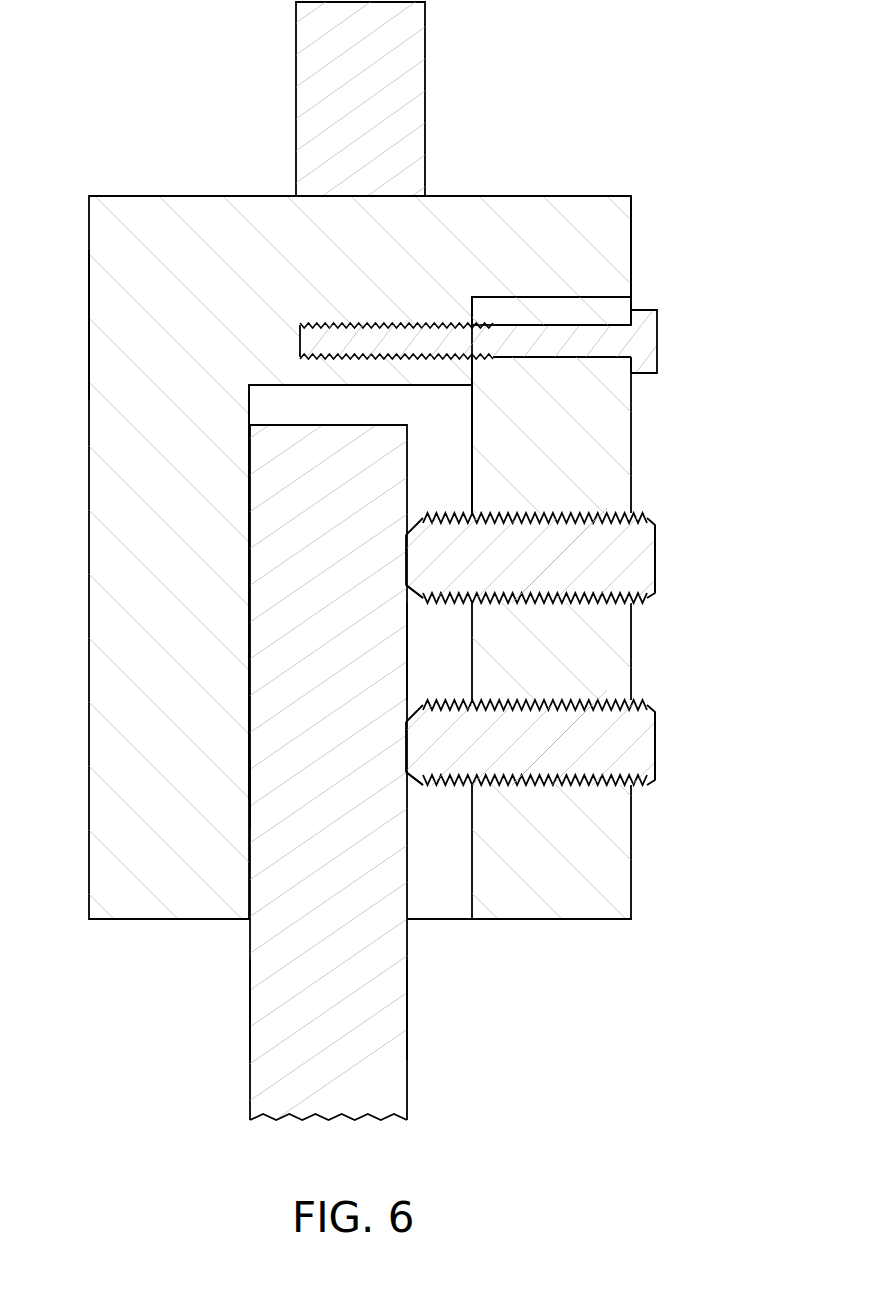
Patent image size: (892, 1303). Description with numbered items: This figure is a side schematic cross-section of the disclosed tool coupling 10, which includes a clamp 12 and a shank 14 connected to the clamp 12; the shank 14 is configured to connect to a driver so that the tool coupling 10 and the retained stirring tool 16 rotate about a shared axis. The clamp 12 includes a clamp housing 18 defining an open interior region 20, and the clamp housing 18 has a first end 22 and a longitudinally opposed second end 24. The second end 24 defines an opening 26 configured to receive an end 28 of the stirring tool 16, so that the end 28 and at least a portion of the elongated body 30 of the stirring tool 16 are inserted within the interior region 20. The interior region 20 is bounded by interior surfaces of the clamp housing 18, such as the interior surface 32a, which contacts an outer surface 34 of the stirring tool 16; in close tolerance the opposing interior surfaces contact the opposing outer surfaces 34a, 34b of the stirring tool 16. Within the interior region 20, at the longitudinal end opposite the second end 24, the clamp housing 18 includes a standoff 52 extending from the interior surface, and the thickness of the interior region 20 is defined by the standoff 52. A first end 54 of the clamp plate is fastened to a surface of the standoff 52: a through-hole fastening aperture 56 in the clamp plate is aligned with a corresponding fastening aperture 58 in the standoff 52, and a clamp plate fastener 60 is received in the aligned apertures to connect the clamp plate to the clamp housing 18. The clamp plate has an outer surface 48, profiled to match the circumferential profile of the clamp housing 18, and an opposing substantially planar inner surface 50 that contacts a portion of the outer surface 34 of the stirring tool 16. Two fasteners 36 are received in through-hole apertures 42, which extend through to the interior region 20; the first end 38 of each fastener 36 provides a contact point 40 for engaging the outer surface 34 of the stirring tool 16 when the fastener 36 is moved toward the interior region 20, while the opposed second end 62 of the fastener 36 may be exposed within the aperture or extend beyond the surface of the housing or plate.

The tool coupling 10 is at (411, 132).
The clamp 12 is at (89, 248).
The shank 14 is at (425, 110).
The stirring tool 16 is at (385, 1063).
The clamp housing 18 is at (112, 308).
The open interior region 20 is at (265, 402).
The first end 22 is at (463, 148).
The second end 24 is at (169, 984).
The opening 26 is at (407, 922).
The end 28 is at (347, 562).
The elongated body 30 is at (262, 746).
The interior surface 32a is at (249, 578).
The outer surface 34 is at (250, 1015).
The outer surface 34a is at (250, 787).
The outer surface 34b is at (406, 648).
The fastener 36 is at (600, 542).
The first end 38 is at (420, 603).
The contact point 40 is at (406, 548).
The through-hole aperture 42 is at (545, 513).
The outer surface 48 is at (631, 641).
The inner surface 50 is at (472, 455).
The standoff 52 is at (472, 372).
The first end 54 is at (673, 240).
The through-hole fastening aperture 56 is at (622, 314).
The fastening aperture 58 is at (368, 322).
The clamp plate fastener 60 is at (645, 342).
The second end 62 is at (655, 556).